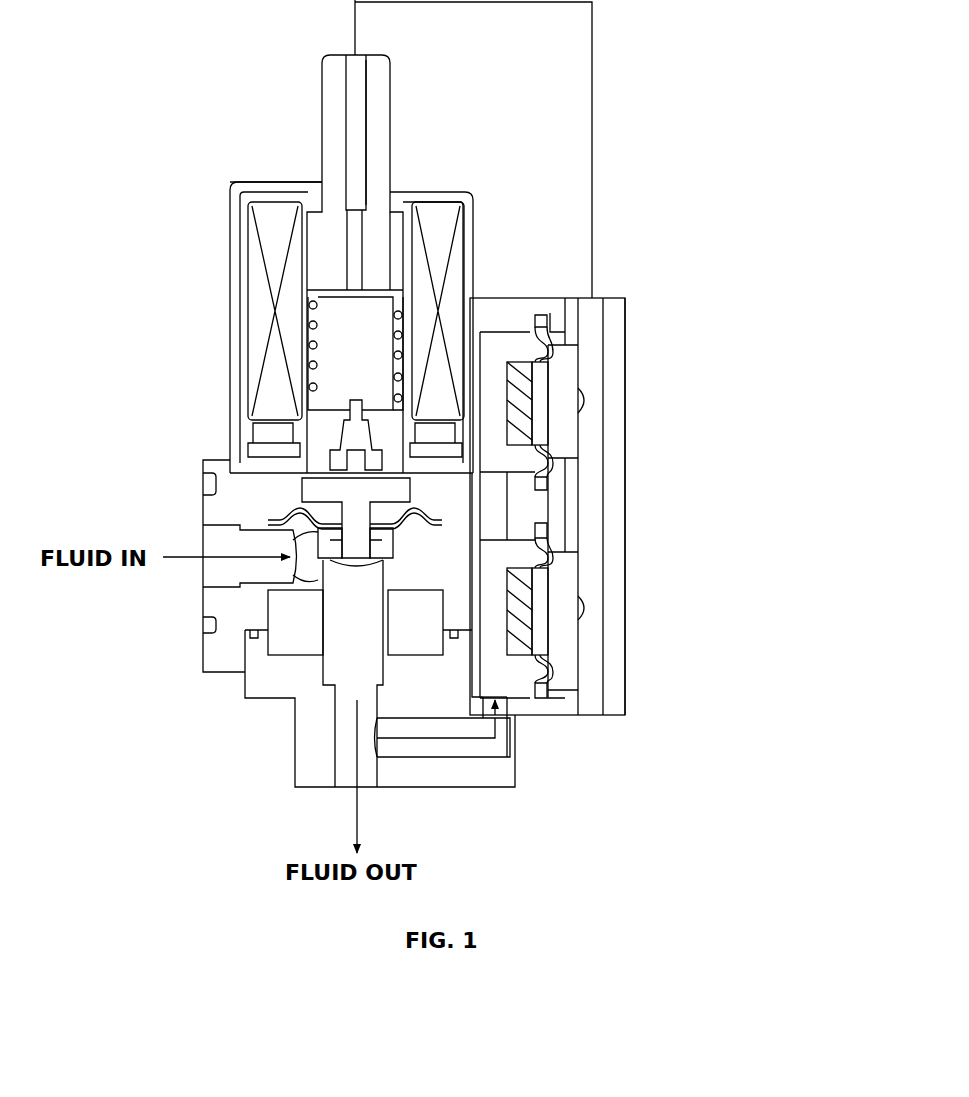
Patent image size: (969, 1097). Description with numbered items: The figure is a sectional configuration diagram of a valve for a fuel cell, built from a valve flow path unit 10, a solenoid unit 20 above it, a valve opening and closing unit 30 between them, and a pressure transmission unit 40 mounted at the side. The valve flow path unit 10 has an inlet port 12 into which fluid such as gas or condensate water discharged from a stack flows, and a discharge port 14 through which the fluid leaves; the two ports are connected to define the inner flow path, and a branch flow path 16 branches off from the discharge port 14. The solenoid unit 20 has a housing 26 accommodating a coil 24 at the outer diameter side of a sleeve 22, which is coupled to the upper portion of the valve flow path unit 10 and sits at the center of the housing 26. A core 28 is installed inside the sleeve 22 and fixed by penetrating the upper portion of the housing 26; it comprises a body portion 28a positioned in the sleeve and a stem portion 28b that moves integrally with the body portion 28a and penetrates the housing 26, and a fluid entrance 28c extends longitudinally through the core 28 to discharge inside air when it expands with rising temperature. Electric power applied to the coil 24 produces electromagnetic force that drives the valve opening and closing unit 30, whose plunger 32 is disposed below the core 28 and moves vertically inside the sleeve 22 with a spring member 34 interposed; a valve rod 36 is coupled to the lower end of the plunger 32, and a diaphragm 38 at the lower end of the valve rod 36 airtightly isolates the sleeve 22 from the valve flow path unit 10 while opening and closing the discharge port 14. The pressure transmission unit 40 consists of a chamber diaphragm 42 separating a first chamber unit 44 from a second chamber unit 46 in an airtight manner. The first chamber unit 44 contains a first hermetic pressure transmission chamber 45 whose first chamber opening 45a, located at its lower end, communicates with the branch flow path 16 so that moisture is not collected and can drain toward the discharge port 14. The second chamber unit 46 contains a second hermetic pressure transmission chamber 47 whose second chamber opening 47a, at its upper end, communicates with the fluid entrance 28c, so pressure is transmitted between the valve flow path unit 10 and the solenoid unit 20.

The valve flow path unit 10 is at (163, 495).
The inlet port 12 is at (222, 570).
The discharge port 14 is at (340, 665).
The branch flow path 16 is at (460, 745).
The solenoid unit 20 is at (160, 192).
The sleeve 22 is at (305, 462).
The coil 24 is at (262, 335).
The housing 26 is at (233, 190).
The core 28 is at (508, 90).
The body portion 28a is at (385, 225).
The stem portion 28b is at (380, 110).
The fluid entrance 28c is at (358, 92).
The valve opening and closing unit 30 is at (290, 535).
The plunger 32 is at (372, 310).
The spring member 34 is at (405, 358).
The valve rod 36 is at (350, 495).
The diaphragm 38 is at (317, 553).
The pressure transmission unit 40 is at (655, 380).
The chamber diaphragm 42 is at (518, 598).
The first chamber unit 44 is at (553, 720).
The first hermetic pressure transmission chamber 45 is at (497, 636).
The first chamber opening 45a is at (537, 718).
The second chamber unit 46 is at (627, 690).
The second hermetic pressure transmission chamber 47 is at (563, 637).
The second chamber opening 47a is at (602, 298).